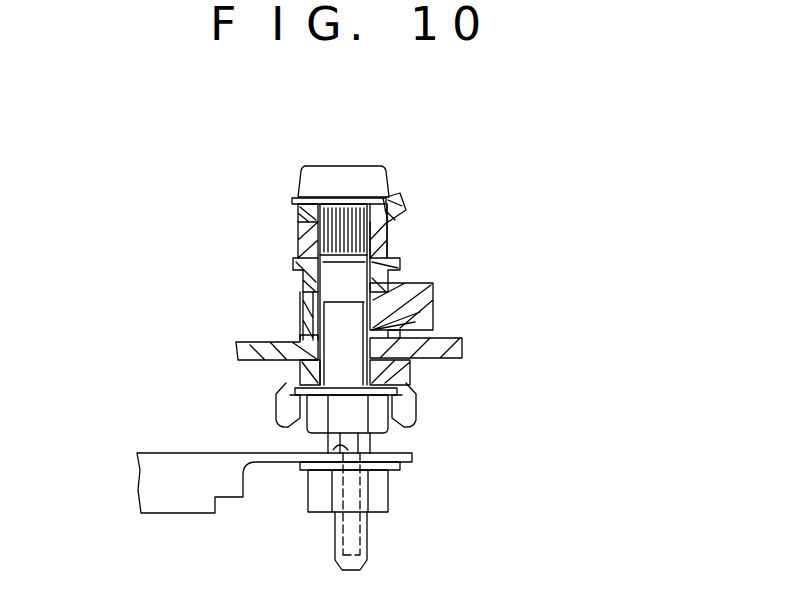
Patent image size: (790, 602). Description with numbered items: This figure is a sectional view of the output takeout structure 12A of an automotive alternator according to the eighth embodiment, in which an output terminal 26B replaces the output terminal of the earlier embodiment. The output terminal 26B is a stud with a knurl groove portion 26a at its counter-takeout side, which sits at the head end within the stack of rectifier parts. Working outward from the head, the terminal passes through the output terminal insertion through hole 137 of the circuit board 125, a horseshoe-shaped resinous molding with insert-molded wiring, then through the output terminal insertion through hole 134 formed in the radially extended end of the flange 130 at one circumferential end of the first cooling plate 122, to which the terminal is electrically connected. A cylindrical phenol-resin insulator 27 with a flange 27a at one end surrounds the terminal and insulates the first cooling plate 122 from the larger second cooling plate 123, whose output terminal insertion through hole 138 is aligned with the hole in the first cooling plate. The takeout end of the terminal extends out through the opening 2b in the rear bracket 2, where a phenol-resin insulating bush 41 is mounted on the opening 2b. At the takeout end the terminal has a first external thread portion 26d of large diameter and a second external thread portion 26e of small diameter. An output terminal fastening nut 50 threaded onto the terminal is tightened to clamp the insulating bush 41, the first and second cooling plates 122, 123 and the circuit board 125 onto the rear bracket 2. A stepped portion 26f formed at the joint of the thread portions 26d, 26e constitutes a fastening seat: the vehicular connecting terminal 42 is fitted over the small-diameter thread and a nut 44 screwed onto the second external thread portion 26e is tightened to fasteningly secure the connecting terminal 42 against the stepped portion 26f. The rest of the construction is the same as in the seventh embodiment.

The support post assembly 12A is at (468, 124).
The output terminal 26B is at (329, 163).
The knurl groove portion 26a is at (353, 213).
The circuit board 125 is at (411, 196).
The output terminal insertion through hole 137 is at (300, 210).
The output terminal insertion through hole 134 is at (305, 238).
The first cooling plate 122 is at (394, 232).
The flange 130 is at (388, 255).
The insulator 27 is at (293, 272).
The flange 27a is at (380, 280).
The second cooling plate 123 is at (440, 290).
The output terminal insertion through hole 138 is at (305, 303).
The opening 2b is at (398, 325).
The rear bracket 2 is at (470, 349).
The connecting terminal 42 is at (200, 451).
The insulating bush 41 is at (276, 384).
The first external thread portion 26d is at (330, 440).
The output terminal fastening nut 50 is at (380, 412).
The nut 44 is at (395, 496).
The stepped portion 26f is at (332, 446).
The second external thread portion 26e is at (335, 536).